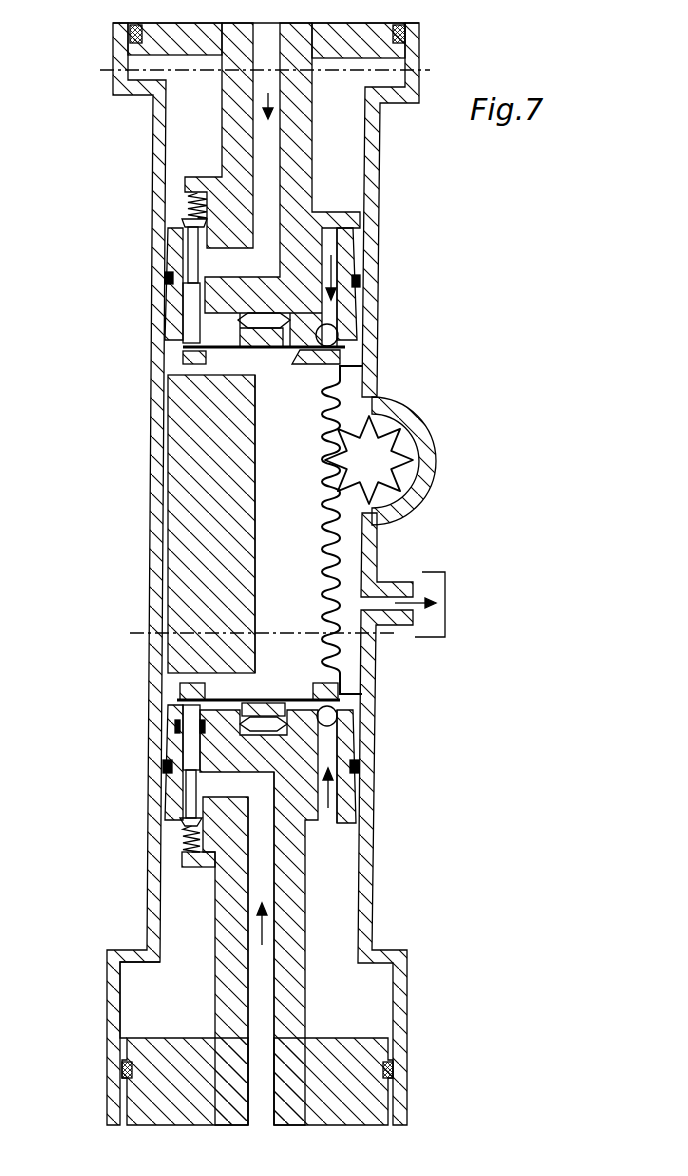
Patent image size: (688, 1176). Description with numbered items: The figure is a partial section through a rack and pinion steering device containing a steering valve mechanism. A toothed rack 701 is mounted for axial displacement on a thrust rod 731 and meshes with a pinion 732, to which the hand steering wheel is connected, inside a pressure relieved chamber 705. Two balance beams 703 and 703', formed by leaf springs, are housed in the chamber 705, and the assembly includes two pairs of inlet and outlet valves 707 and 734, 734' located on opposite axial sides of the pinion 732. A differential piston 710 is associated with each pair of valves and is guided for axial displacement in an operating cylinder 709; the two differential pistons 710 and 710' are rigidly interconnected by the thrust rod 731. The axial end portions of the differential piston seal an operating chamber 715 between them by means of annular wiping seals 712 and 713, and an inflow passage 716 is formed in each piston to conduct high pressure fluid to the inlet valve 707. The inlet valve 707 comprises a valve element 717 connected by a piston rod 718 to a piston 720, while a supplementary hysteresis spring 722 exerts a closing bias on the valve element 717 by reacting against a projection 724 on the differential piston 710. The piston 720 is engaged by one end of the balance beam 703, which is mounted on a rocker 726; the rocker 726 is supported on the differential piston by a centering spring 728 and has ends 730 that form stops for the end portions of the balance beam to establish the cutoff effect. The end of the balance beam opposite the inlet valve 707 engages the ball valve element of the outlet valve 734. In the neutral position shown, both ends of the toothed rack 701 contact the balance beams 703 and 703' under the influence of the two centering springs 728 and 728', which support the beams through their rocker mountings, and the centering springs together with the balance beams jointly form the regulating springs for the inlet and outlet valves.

The toothed rack 701 is at (280, 472).
The balance beam 703 is at (180, 874).
The balance beam 703' is at (201, 268).
The pressure relieved chamber 705 is at (350, 555).
The inlet valve 707 is at (168, 770).
The operating cylinder 709 is at (140, 902).
The differential piston 710 is at (218, 1059).
The differential piston 710' is at (224, 135).
The annular wiping seal 712 is at (127, 1070).
The annular wiping seal 713 is at (183, 773).
The operating chamber 715 is at (172, 1000).
The inflow passage 716 is at (262, 1003).
The valve element 717 is at (185, 824).
The piston rod 718 is at (330, 775).
The piston 720 is at (182, 718).
The supplementary hysteresis spring 722 is at (183, 858).
The projection 724 is at (210, 800).
The rocker 726 is at (345, 700).
The centering spring 728 is at (419, 749).
The centering spring 728' is at (413, 299).
The ends 730 is at (397, 658).
The thrust rod 731 is at (185, 378).
The pinion 732 is at (383, 463).
The outlet valve 734 is at (349, 719).
The outlet valve 734' is at (355, 358).